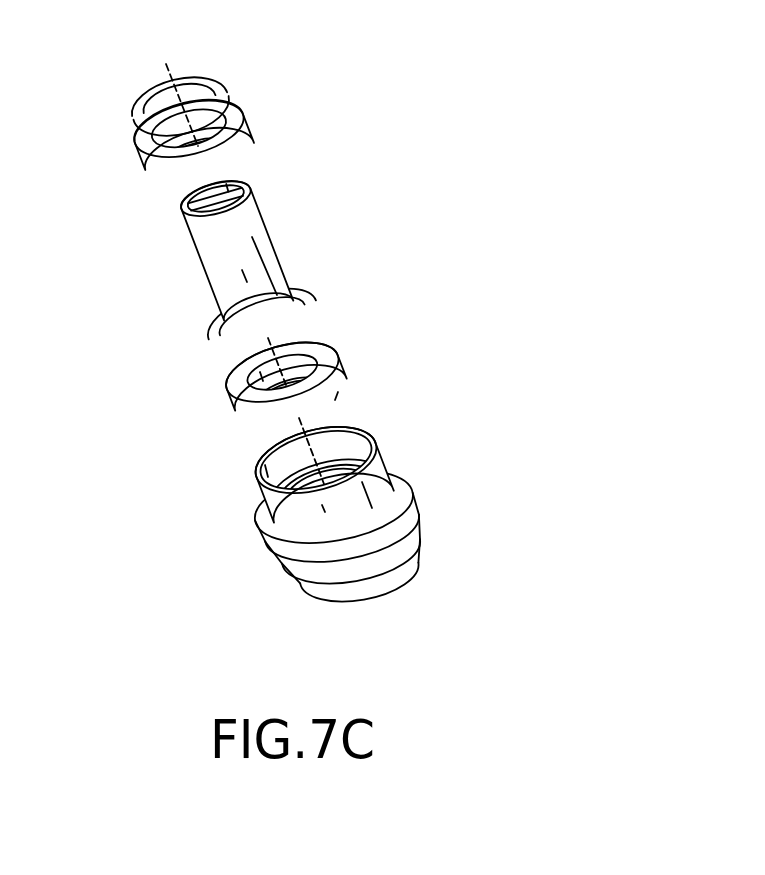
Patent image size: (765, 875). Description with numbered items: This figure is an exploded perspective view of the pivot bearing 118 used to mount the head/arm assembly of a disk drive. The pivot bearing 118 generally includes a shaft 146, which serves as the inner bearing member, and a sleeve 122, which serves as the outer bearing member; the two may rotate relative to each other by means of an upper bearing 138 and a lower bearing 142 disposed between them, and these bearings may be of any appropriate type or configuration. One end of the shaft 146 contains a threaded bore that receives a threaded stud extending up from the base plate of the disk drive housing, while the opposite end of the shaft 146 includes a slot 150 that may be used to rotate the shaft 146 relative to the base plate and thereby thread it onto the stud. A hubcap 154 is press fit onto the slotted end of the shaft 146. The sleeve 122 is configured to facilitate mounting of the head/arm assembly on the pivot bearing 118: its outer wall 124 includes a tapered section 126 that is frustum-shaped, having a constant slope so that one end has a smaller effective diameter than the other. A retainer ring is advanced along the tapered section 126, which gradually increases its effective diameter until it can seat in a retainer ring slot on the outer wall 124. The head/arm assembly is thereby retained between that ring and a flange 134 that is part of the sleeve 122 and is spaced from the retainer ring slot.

The pivot bearing 118 is at (310, 320).
The sleeve 122 is at (385, 464).
The outer wall 124 is at (370, 477).
The tapered section 126 is at (363, 562).
The flange 134 is at (270, 550).
The upper bearing 138 is at (152, 160).
The lower bearing 142 is at (233, 411).
The shaft 146 is at (277, 242).
The slot 150 is at (253, 215).
The hubcap 154 is at (205, 78).